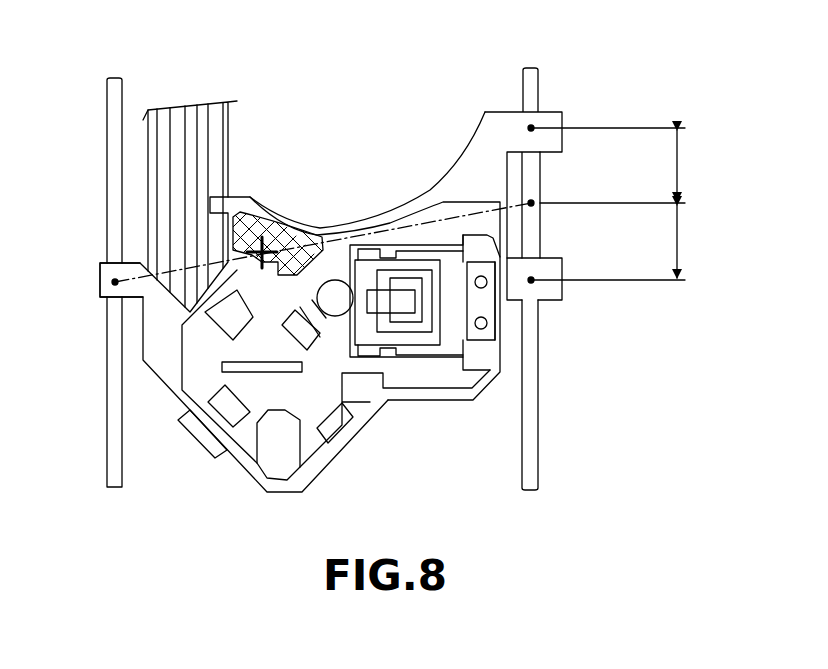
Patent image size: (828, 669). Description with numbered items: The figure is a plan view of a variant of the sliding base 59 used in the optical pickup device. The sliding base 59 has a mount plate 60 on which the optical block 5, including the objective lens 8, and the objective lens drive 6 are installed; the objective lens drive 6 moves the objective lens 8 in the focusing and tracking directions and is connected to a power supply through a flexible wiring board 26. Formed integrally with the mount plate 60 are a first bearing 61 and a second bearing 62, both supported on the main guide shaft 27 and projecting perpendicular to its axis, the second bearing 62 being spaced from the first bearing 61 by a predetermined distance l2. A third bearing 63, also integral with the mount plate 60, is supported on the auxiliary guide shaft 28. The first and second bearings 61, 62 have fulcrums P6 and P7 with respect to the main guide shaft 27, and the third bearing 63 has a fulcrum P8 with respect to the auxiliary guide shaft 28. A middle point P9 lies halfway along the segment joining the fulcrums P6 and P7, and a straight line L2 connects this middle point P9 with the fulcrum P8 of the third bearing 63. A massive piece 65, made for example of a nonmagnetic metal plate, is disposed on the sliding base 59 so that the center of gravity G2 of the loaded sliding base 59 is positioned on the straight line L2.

The optical block 5 is at (303, 430).
The objective lens drive 6 is at (439, 370).
The objective lens 8 is at (338, 297).
The flexible wiring board 26 is at (226, 152).
The main guide shaft 27 is at (536, 445).
The auxiliary guide shaft 28 is at (118, 448).
The sliding base 59 is at (415, 212).
The mount plate 60 is at (367, 417).
The first bearing 61 is at (545, 112).
The second bearing 62 is at (555, 296).
The third bearing 63 is at (107, 266).
The massive piece 65 is at (253, 207).
The center of gravity G2 is at (281, 222).
The straight line L2 is at (462, 218).
The fulcrum of the first bearing P6 is at (531, 128).
The fulcrum of the second bearing P7 is at (531, 280).
The fulcrum of the third bearing P8 is at (123, 300).
The middle point P9 is at (531, 203).
The predetermined distance l2 is at (690, 204).